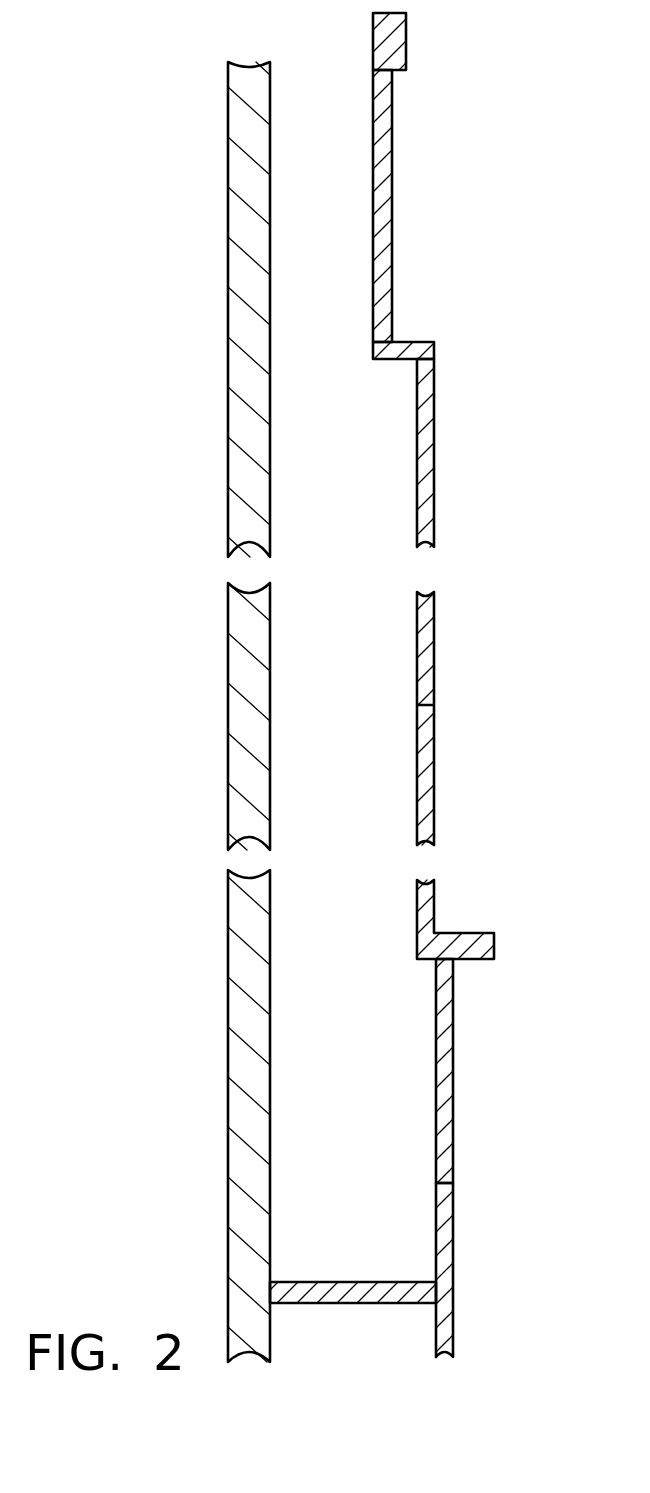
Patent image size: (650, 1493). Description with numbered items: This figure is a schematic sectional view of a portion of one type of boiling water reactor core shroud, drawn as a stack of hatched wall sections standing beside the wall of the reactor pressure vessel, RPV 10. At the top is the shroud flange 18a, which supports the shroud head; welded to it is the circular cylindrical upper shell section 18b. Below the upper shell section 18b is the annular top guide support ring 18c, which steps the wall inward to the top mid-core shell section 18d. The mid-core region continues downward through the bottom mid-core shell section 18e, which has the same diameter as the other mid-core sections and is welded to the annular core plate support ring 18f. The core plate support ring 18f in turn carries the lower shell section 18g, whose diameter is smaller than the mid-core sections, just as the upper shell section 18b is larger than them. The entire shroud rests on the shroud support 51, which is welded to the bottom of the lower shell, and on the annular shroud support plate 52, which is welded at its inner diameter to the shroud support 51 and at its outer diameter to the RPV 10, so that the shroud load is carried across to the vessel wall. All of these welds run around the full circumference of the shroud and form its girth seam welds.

The RPV 10 is at (237, 1010).
The shroud flange 18a is at (400, 43).
The upper shell section 18b is at (383, 182).
The top guide support ring 18c is at (413, 348).
The top mid-core shell section 18d is at (427, 427).
The bottom mid-core shell section 18e is at (428, 798).
The core plate support ring 18f is at (468, 932).
The lower shell section 18g is at (447, 1023).
The shroud support 51 is at (447, 1233).
The shroud support plate 52 is at (380, 1288).